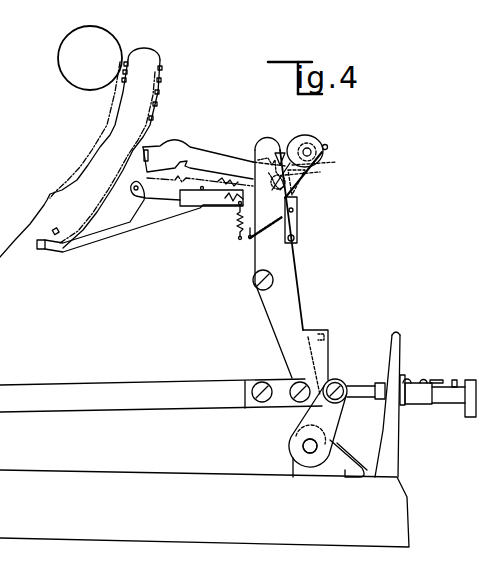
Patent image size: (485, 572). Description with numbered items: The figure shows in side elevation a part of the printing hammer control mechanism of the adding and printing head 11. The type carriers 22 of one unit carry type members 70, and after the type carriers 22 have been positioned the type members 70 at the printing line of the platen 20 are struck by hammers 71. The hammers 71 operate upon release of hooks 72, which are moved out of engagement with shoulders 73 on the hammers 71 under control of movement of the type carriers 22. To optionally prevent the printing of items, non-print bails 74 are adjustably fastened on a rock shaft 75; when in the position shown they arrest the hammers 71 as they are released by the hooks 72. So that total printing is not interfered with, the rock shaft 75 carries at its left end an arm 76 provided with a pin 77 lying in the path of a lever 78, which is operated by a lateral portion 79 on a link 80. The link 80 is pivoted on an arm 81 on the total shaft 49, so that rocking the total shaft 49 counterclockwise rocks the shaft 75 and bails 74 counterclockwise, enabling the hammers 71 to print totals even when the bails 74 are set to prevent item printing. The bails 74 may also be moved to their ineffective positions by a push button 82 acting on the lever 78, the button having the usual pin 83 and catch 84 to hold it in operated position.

The platen 20 is at (90, 58).
The type carriers 22 is at (147, 52).
The type members 70 is at (124, 56).
The hammers 71 is at (235, 150).
The hooks 72 is at (299, 218).
The shoulders 73 is at (300, 184).
The bails 74 is at (322, 168).
The rock shaft 75 is at (309, 150).
The arm 76 is at (298, 188).
The pin 77 is at (282, 194).
The lever 78 is at (256, 262).
The lateral portion 79 is at (333, 323).
The link 80 is at (173, 395).
The arm 81 is at (328, 431).
The total shaft 49 is at (303, 445).
The adding and printing head 11 is at (386, 404).
The push button 82 is at (470, 406).
The pin 83 is at (452, 380).
The catch 84 is at (438, 382).